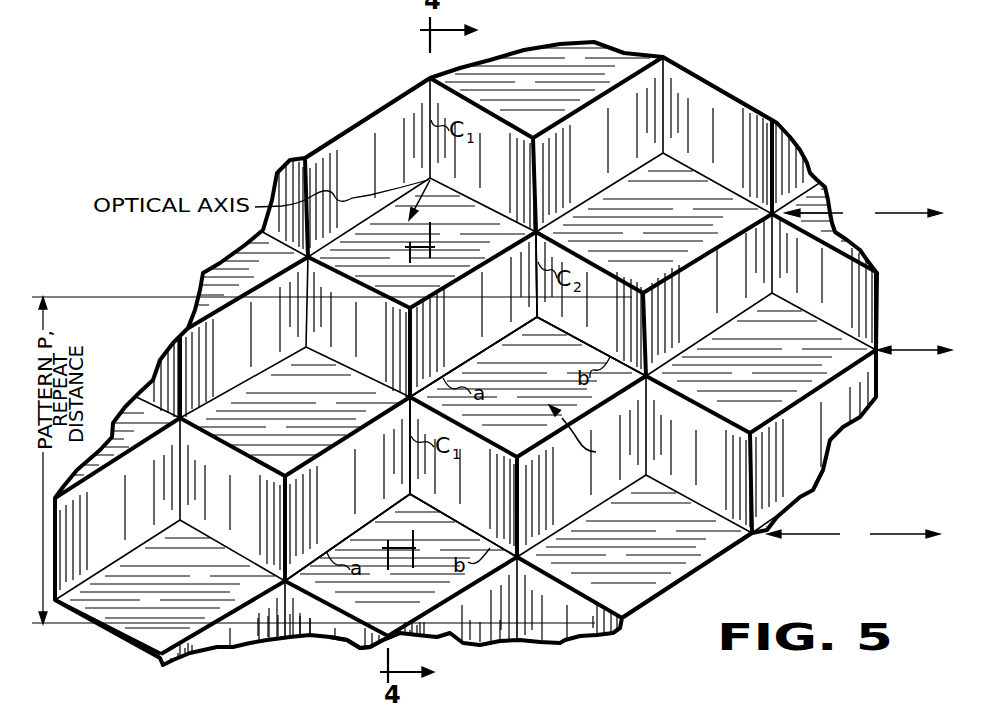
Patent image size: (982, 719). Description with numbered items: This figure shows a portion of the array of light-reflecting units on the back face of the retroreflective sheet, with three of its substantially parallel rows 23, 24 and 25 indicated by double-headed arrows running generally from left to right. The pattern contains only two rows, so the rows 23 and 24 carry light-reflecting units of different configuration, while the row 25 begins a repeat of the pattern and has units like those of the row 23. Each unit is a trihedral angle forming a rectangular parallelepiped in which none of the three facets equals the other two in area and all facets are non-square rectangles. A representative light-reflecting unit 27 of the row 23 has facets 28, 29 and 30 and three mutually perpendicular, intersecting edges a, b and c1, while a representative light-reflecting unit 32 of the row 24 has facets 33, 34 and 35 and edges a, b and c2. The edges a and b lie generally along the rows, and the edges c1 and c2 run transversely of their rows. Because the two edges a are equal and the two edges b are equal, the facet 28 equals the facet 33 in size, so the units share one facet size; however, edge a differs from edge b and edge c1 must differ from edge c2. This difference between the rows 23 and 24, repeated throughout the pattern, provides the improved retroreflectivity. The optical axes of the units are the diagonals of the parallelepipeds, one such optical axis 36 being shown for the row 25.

The row 23 is at (853, 535).
The row 24 is at (903, 350).
The row 25 is at (863, 214).
The light-reflecting unit 27 is at (359, 639).
The facet 28 is at (420, 606).
The facet 29 is at (363, 494).
The facet 30 is at (475, 494).
The light-reflecting unit 32 is at (587, 435).
The facet 33 is at (535, 396).
The facet 34 is at (486, 327).
The facet 35 is at (617, 327).
The optical axis 36 is at (425, 199).